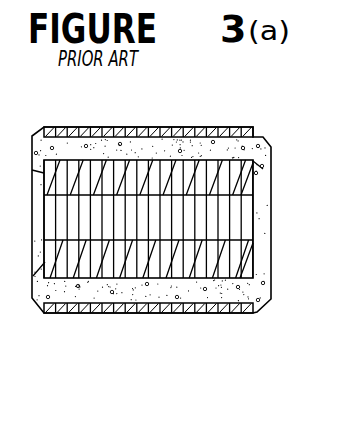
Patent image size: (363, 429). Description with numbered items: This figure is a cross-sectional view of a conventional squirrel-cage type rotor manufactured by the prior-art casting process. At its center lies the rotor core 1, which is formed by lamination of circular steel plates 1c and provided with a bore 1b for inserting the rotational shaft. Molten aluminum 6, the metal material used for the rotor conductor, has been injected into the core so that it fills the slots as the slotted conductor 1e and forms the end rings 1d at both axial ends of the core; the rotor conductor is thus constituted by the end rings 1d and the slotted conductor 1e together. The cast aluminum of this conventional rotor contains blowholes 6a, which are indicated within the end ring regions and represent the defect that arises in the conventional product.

The rotor core 1 is at (176, 218).
The bore 1b is at (242, 220).
The circular steel plate 1c is at (246, 181).
The end ring 1d is at (263, 291).
The slotted conductor 1e is at (132, 287).
The molten aluminum 6 is at (178, 147).
The blowholes 6a is at (137, 147).